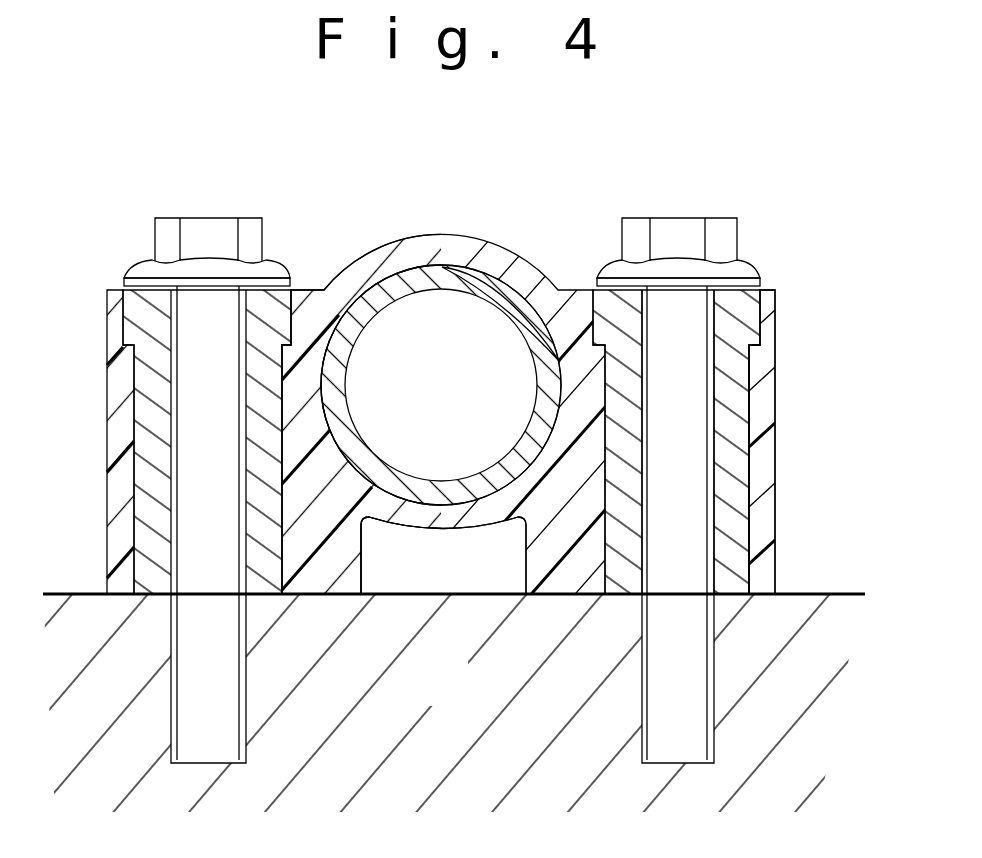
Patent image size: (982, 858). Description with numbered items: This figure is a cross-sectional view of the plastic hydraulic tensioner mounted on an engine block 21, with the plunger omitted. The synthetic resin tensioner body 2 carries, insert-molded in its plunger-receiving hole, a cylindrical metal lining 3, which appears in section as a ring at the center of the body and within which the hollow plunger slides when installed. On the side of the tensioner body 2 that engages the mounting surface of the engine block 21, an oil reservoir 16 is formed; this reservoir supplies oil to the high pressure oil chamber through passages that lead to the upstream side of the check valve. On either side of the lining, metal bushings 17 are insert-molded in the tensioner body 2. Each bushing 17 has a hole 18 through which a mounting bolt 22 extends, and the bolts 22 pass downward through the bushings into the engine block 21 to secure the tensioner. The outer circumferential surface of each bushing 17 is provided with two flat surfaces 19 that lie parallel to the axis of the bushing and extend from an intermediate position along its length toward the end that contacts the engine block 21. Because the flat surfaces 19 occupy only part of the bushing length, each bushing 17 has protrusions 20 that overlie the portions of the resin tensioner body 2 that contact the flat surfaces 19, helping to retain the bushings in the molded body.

The tensioner body 2 is at (318, 305).
The cylindrical metal lining 3 is at (457, 273).
The oil reservoir 16 is at (444, 573).
The metal bushing 17 is at (752, 403).
The hole 18 is at (715, 448).
The flat surface 19 is at (755, 505).
The protrusion 20 is at (752, 318).
The engine block 21 is at (800, 662).
The mounting bolt 22 is at (683, 236).